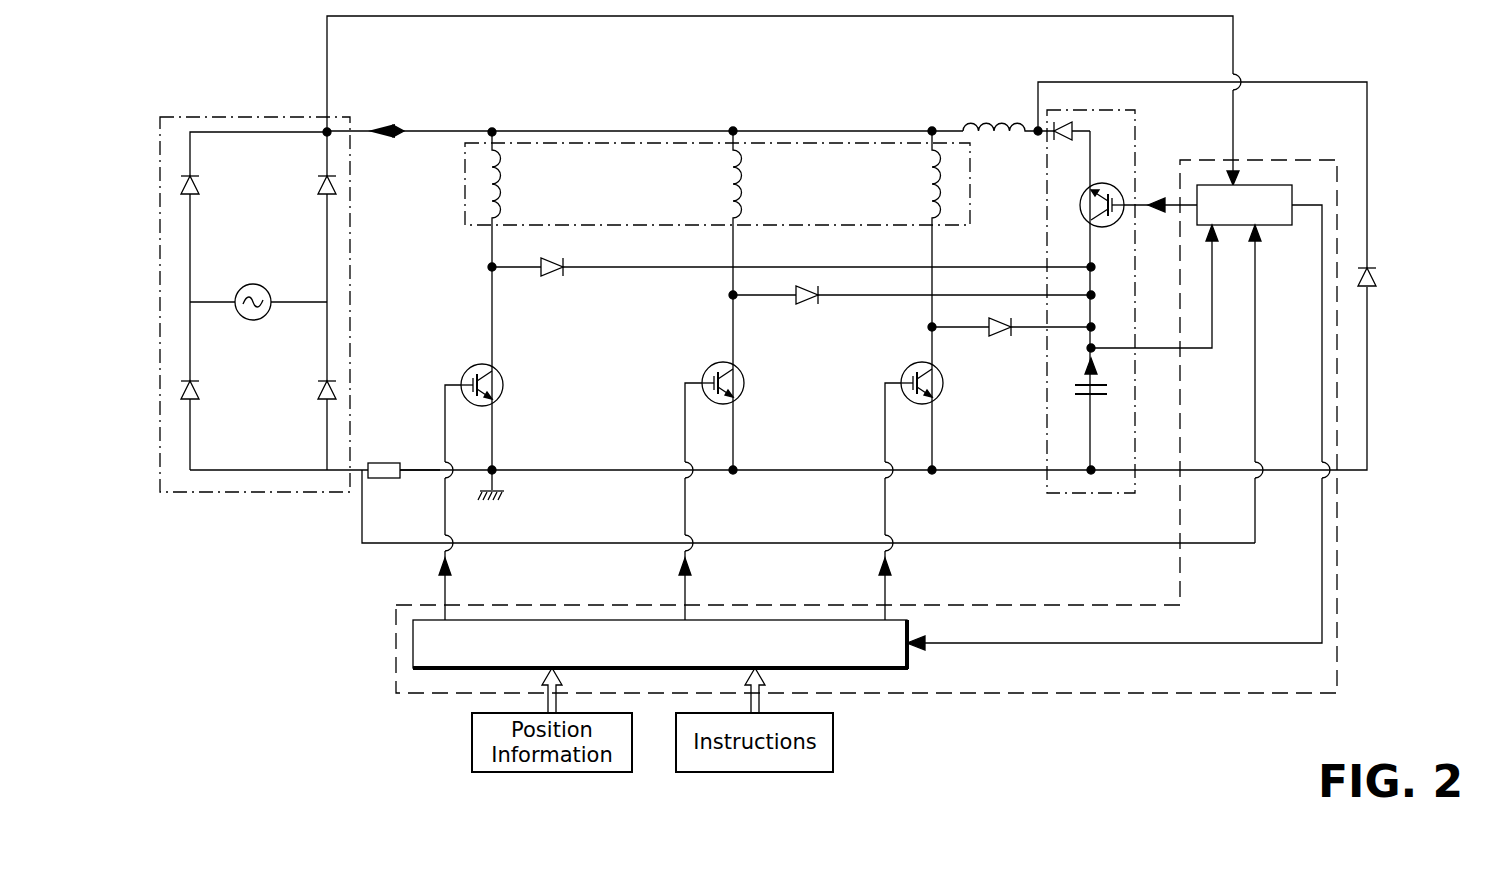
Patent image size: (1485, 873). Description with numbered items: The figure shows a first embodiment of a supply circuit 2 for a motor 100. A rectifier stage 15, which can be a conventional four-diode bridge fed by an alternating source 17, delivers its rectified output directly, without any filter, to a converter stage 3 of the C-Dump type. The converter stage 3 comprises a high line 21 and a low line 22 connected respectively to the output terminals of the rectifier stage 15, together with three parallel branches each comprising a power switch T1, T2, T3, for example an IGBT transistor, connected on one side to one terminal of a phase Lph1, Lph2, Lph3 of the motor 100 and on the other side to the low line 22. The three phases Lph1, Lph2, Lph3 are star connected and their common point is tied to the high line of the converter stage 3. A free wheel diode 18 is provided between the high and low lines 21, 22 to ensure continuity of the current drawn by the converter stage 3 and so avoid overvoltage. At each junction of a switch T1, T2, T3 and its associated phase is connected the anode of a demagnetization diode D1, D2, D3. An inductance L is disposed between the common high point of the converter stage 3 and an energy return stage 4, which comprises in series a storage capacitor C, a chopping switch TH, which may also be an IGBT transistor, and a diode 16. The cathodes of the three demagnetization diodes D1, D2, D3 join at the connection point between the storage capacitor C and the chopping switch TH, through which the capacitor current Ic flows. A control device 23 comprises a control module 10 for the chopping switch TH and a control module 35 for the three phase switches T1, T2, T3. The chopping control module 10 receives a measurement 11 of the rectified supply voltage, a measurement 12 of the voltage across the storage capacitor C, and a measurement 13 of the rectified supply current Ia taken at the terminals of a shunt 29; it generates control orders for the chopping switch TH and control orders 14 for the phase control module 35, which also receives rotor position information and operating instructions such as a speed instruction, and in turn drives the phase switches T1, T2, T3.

The supply circuit 2 is at (1392, 410).
The converter stage 3 is at (838, 135).
The energy return stage 4 is at (1117, 259).
The control module for the chopping switch 10 is at (1296, 172).
The measurement of the rectified supply voltage 11 is at (1233, 40).
The measurement of the storage capacitor voltage 12 is at (1213, 263).
The measurement of the rectified supply current 13 is at (1255, 310).
The control orders for the phase control module 14 is at (1322, 573).
The rectifier stage 15 is at (270, 113).
The diode 16 is at (1072, 125).
The AC source 17 is at (257, 284).
The free wheel diode 18 is at (1380, 282).
The high line 21 is at (443, 130).
The low line 22 is at (420, 473).
The control device 23 is at (821, 426).
The shunt 29 is at (384, 462).
The control module for the three phase switches 35 is at (893, 620).
The motor 100 is at (748, 178).
The inductance L is at (1005, 118).
The chopping switch TH is at (1110, 180).
The storage capacitor C is at (1098, 398).
The capacitor current Ic is at (1103, 370).
The rectified supply current Ia is at (378, 105).
The phase Lph1 is at (502, 192).
The phase Lph2 is at (742, 187).
The phase Lph3 is at (943, 182).
The demagnetization diode D1 is at (552, 280).
The demagnetization diode D2 is at (805, 306).
The demagnetization diode D3 is at (1000, 338).
The power switch T1 is at (500, 395).
The power switch T2 is at (740, 395).
The power switch T3 is at (940, 393).